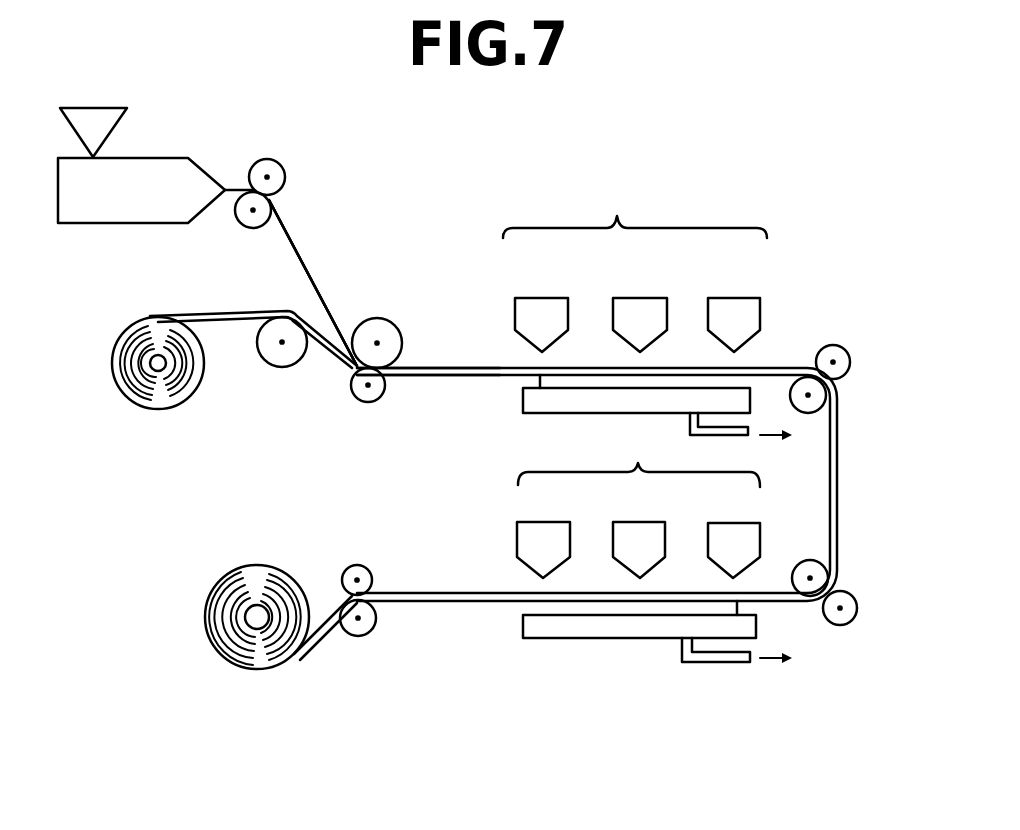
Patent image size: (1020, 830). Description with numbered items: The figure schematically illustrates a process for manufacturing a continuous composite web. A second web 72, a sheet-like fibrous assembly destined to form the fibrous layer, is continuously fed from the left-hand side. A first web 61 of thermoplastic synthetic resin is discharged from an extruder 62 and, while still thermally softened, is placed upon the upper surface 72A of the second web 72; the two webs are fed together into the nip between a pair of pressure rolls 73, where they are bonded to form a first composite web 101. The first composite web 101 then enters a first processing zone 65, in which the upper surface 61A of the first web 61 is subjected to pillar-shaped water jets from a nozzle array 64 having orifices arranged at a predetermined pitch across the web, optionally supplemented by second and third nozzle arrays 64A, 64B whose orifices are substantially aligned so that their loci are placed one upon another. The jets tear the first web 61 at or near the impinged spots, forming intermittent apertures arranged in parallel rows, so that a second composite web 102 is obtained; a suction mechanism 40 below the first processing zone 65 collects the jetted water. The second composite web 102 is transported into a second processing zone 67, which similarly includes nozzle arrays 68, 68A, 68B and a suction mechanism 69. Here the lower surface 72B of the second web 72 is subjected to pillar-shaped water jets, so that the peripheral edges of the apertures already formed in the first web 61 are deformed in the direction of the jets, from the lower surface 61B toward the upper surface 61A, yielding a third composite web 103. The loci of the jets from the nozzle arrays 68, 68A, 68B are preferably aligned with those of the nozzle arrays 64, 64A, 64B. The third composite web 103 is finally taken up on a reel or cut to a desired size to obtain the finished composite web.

The suction mechanism 40 is at (522, 399).
The first web 61 is at (296, 222).
The upper surface of the first web 61A is at (318, 289).
The lower surface of the first web 61B is at (295, 248).
The extruder 62 is at (160, 157).
The nozzle array 64 is at (522, 317).
The second nozzle array 64A is at (655, 327).
The third nozzle array 64B is at (752, 327).
The first processing zone 65 is at (646, 263).
The second processing zone 67 is at (623, 501).
The nozzle array 68 is at (740, 552).
The nozzle array 68A is at (623, 548).
The nozzle array 68B is at (525, 545).
The suction mechanism 69 is at (537, 640).
The second web 72 is at (234, 325).
The upper surface of the second web 72A is at (236, 312).
The lower surface of the second web 72B is at (247, 322).
The pressure rolls 73 is at (374, 333).
The first composite web 101 is at (412, 384).
The second composite web 102 is at (640, 485).
The third composite web 103 is at (243, 679).